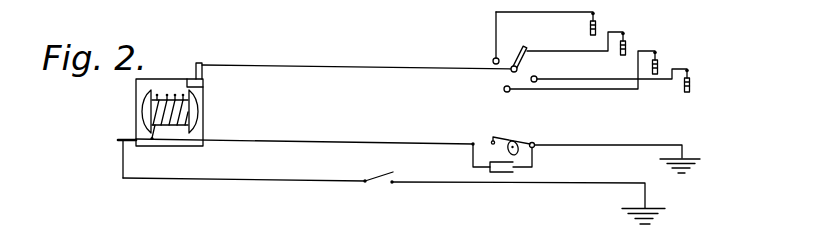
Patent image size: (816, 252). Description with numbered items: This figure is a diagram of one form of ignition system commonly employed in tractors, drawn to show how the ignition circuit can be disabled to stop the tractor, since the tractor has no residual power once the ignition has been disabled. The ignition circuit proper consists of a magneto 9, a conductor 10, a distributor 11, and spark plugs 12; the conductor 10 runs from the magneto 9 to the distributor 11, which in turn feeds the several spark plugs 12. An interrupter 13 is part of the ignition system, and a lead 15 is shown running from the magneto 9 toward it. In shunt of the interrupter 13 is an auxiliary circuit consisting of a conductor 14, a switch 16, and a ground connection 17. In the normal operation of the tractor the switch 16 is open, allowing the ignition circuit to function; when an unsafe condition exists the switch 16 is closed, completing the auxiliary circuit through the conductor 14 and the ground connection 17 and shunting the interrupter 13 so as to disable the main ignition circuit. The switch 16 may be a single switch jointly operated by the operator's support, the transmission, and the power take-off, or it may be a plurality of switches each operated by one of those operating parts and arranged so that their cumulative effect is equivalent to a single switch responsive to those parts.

The magneto 9 is at (145, 87).
The conductor 10 is at (289, 64).
The distributor 11 is at (488, 83).
The spark plugs 12 is at (690, 78).
The interrupter 13 is at (525, 132).
The conductor 14 is at (258, 181).
The conductor 15 is at (118, 141).
The switch 16 is at (381, 194).
The ground connection 17 is at (670, 215).